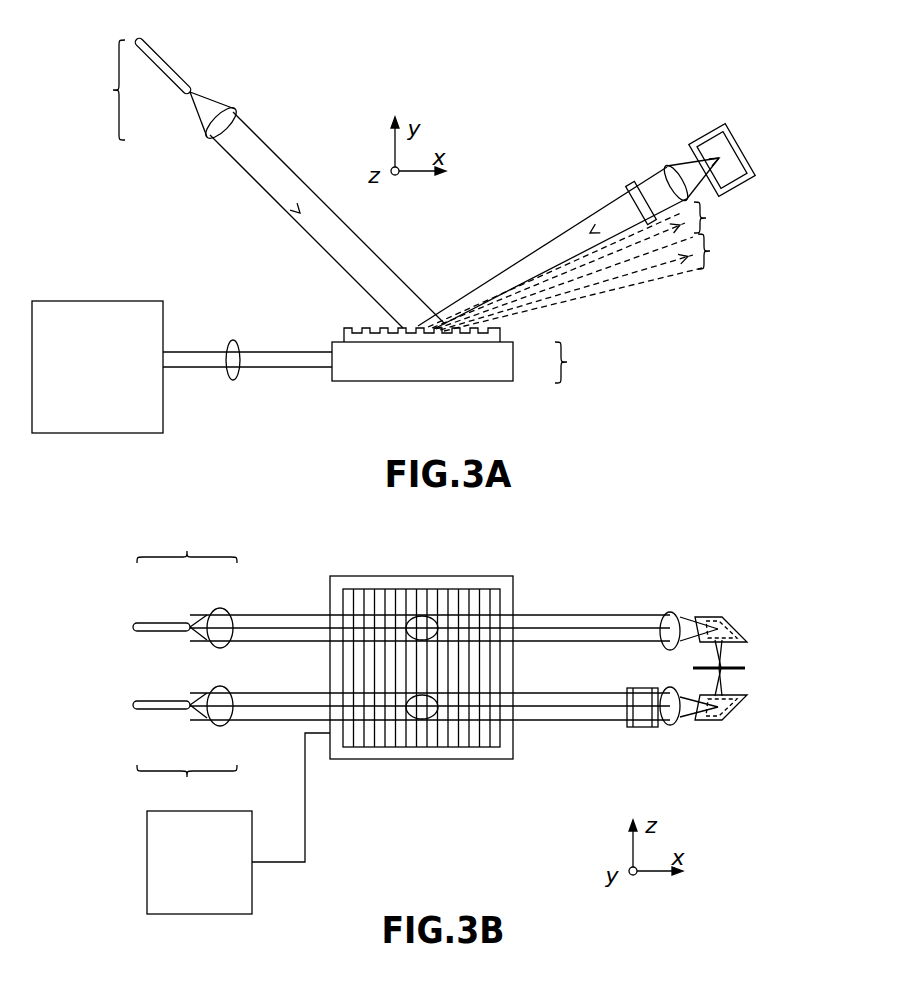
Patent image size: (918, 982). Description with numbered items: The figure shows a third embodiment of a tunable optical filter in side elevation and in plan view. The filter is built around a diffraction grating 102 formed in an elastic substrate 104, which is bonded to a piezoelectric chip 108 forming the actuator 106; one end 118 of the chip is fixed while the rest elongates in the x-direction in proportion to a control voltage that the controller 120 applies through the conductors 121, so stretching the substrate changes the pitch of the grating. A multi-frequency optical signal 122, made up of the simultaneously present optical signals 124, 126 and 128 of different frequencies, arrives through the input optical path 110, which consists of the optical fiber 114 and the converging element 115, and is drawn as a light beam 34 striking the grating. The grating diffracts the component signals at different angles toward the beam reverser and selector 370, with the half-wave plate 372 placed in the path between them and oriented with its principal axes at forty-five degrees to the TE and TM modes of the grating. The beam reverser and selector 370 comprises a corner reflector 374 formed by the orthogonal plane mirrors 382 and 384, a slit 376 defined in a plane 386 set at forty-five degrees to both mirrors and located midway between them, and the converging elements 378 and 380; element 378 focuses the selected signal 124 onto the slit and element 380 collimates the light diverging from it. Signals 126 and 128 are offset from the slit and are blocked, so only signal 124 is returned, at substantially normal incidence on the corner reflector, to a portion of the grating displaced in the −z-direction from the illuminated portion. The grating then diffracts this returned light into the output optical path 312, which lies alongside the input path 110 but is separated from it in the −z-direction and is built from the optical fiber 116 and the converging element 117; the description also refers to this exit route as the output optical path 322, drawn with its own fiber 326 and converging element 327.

In FIG. 3A, the light beam 34 is at (323, 227).
In FIG. 3A, the diffraction grating 102 is at (365, 326).
In FIG. 3B, the diffraction grating 102 is at (363, 737).
In FIG. 3A, the elastic substrate 104 is at (345, 330).
In FIG. 3B, the elastic substrate 104 is at (402, 747).
In FIG. 3A, the actuator 106 is at (443, 333).
In FIG. 3B, the actuator 106 is at (451, 700).
In FIG. 3A, the piezoelectric chip 108 is at (502, 350).
In FIG. 3B, the piezoelectric chip 108 is at (442, 760).
In FIG. 3B, the input optical path 110 is at (187, 553).
In FIG. 3B, the optical fiber 114 is at (157, 621).
In FIG. 3B, the converging element 115 is at (217, 608).
In FIG. 3B, the optical fiber 116 is at (155, 713).
In FIG. 3B, the converging element 117 is at (222, 725).
In FIG. 3A, the end 118 is at (330, 375).
In FIG. 3A, the controller 120 is at (78, 380).
In FIG. 3B, the controller 120 is at (177, 887).
In FIG. 3A, the conductors 121 is at (233, 382).
In FIG. 3B, the multi-frequency optical signal 122 is at (281, 627).
In FIG. 3B, the optical signal 124 is at (268, 707).
In FIG. 3A, the optical signal 126 is at (706, 218).
In FIG. 3A, the optical signal 128 is at (711, 251).
In FIG. 3B, the output optical path 312 is at (187, 777).
In FIG. 3A, the output optical path 322 is at (111, 90).
In FIG. 3A, the optical fiber 326 is at (170, 58).
In FIG. 3A, the collimating lens 327 is at (234, 110).
In FIG. 3A, the beam reverser and selector 370 is at (740, 139).
In FIG. 3B, the beam reverser and selector 370 is at (751, 659).
In FIG. 3A, the half-wave plate 372 is at (631, 186).
In FIG. 3B, the half-wave plate 372 is at (643, 688).
In FIG. 3A, the corner reflector 374 is at (752, 176).
In FIG. 3B, the corner reflector 374 is at (738, 721).
In FIG. 3A, the slit 376 is at (727, 160).
In FIG. 3B, the slit 376 is at (725, 672).
In FIG. 3B, the converging element 378 is at (668, 612).
In FIG. 3A, the converging element 380 is at (663, 180).
In FIG. 3B, the converging element 380 is at (668, 725).
In FIG. 3B, the plane mirror 382 is at (732, 632).
In FIG. 3B, the plane mirror 384 is at (743, 712).
In FIG. 3A, the plane 386 is at (729, 133).
In FIG. 3B, the plane 386 is at (745, 668).